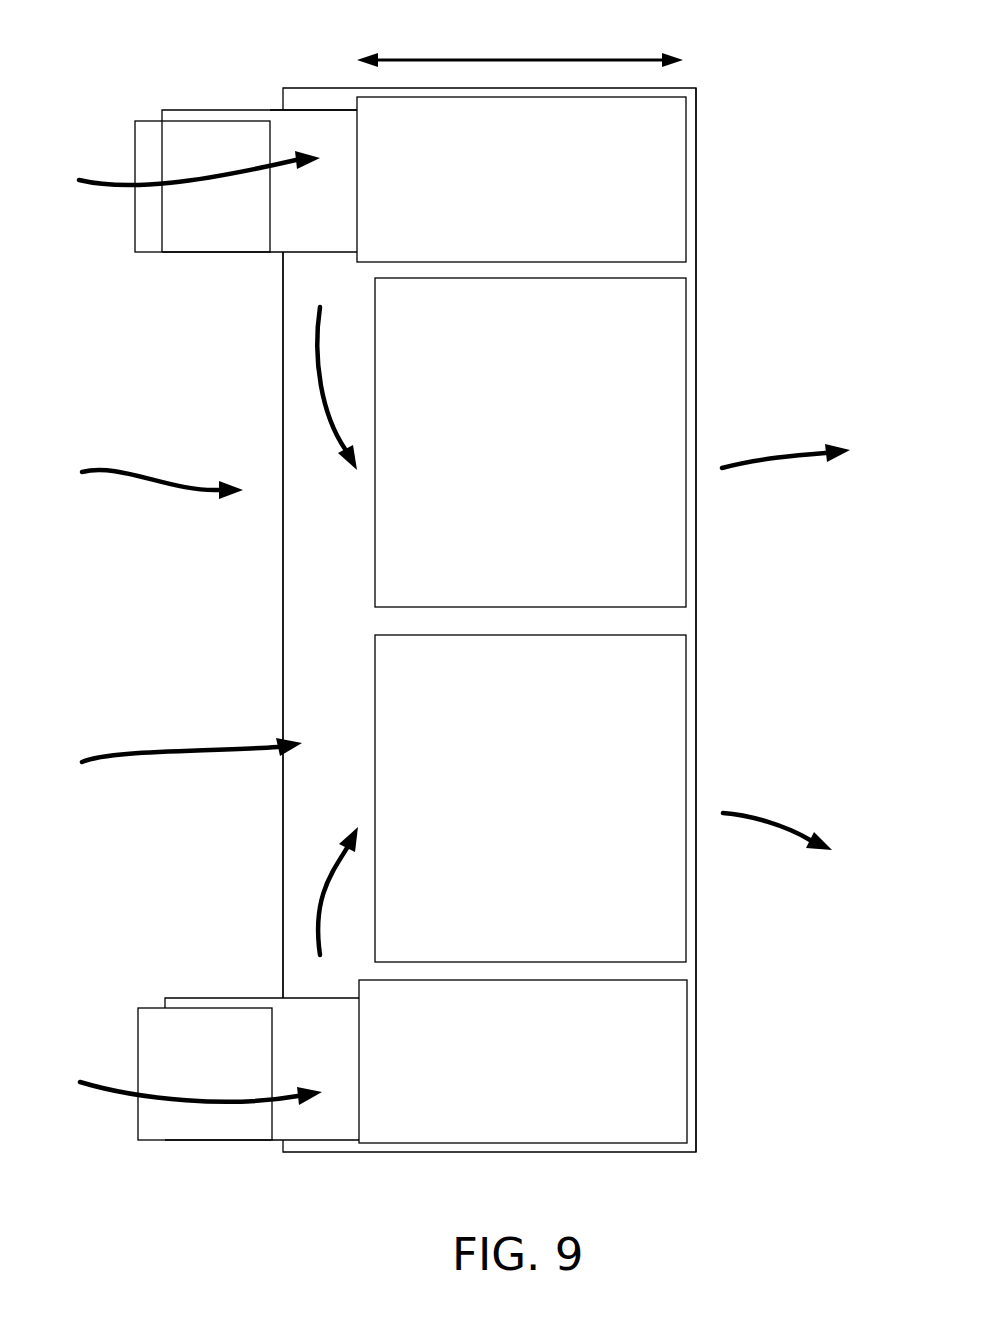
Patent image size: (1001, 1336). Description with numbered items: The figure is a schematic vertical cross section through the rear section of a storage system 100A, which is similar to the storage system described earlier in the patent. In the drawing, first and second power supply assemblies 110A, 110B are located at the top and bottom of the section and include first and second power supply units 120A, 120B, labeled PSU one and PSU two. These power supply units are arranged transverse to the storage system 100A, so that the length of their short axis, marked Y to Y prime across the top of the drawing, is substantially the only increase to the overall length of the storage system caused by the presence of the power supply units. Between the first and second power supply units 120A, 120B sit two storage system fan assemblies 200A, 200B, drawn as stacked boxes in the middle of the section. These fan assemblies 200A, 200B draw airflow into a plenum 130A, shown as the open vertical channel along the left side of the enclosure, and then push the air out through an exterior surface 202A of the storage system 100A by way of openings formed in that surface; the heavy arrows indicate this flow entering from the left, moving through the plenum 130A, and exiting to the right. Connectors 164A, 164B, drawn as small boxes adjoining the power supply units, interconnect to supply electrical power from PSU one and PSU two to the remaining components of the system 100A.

The storage system 100A is at (196, 43).
The first power supply assembly 110A is at (727, 105).
The second power supply assembly 110B is at (739, 1123).
The first power supply unit 120A is at (648, 178).
The second power supply unit 120B is at (652, 1070).
The plenum 130A is at (310, 571).
The connector 164A is at (192, 233).
The connector 164B is at (147, 1043).
The storage system fan assembly 200A is at (530, 442).
The storage system fan assembly 200B is at (530, 798).
The exterior surface 202A is at (697, 360).